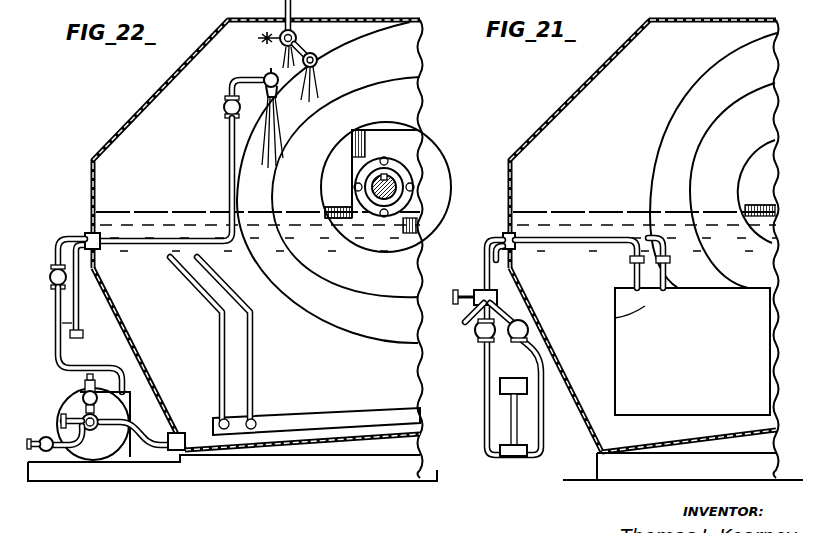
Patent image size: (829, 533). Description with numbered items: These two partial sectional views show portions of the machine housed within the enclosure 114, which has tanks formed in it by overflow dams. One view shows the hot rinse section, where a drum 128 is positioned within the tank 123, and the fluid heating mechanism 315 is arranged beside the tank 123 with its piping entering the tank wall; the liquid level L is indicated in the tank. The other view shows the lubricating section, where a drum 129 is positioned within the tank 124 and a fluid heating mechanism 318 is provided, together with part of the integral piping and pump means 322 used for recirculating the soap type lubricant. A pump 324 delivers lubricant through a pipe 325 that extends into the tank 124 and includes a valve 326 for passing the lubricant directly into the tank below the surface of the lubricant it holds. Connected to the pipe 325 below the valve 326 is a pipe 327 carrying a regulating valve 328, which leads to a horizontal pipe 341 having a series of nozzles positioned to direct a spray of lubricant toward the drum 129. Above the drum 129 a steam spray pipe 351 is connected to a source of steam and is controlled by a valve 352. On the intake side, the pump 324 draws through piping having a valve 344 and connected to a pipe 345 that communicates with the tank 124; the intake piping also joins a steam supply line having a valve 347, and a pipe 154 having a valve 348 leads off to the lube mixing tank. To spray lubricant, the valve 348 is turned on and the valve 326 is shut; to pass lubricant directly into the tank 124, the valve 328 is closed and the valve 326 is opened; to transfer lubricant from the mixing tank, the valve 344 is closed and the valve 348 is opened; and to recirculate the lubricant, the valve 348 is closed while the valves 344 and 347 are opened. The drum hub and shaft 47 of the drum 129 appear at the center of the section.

In FIG. 22, the enclosure 114 is at (182, 71).
In FIG. 21, the enclosure 114 is at (588, 80).
In FIG. 22, the tank 124 is at (256, 359).
In FIG. 22, the pipe 154 is at (38, 478).
In FIG. 22, the liquid level L is at (116, 209).
In FIG. 21, the liquid level L is at (531, 210).
In FIG. 22, the drum 129 is at (404, 102).
In FIG. 22, the shaft and flange 47 is at (397, 183).
In FIG. 22, the fluid heating mechanism 318 is at (338, 400).
In FIG. 22, the valve 352 is at (262, 40).
In FIG. 22, the steam spray pipe 351 is at (318, 60).
In FIG. 22, the horizontal pipe 341 is at (272, 68).
In FIG. 22, the regulating valve 328 is at (222, 107).
In FIG. 22, the pipe 327 is at (226, 135).
In FIG. 22, the piping and pump means 322 is at (85, 228).
In FIG. 22, the valve 326 is at (65, 278).
In FIG. 22, the pipe 325 is at (98, 371).
In FIG. 22, the pump 324 is at (114, 412).
In FIG. 22, the valve 347 is at (100, 394).
In FIG. 22, the valve 344 is at (78, 416).
In FIG. 22, the valve 348 is at (50, 448).
In FIG. 22, the pipe 345 is at (150, 448).
In FIG. 21, the tank 123 is at (656, 346).
In FIG. 21, the drum 128 is at (652, 135).
In FIG. 21, the fluid heating mechanism 315 is at (471, 457).